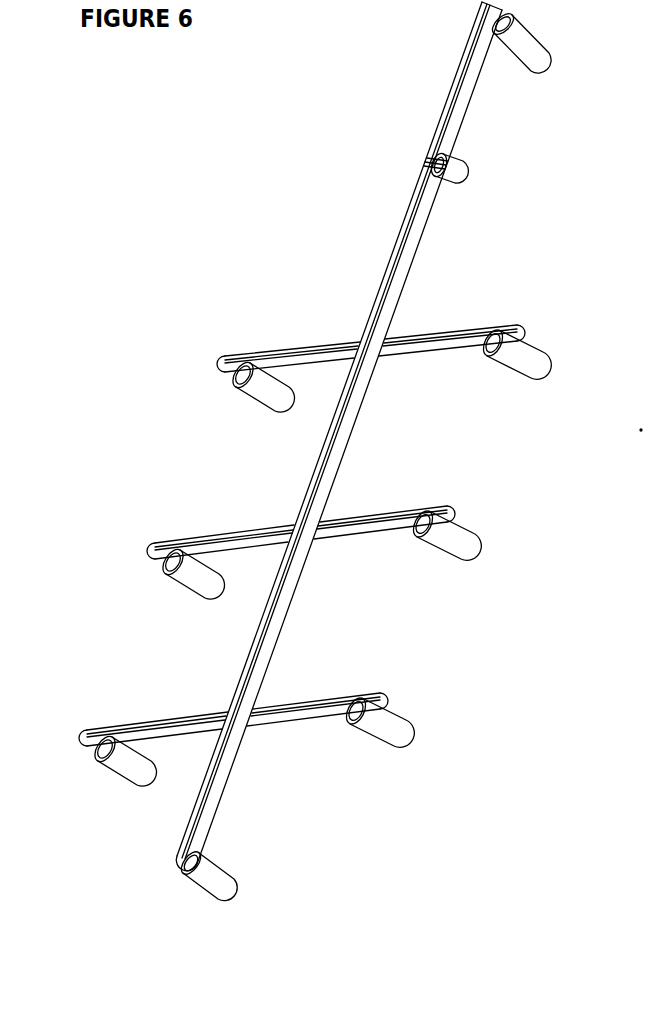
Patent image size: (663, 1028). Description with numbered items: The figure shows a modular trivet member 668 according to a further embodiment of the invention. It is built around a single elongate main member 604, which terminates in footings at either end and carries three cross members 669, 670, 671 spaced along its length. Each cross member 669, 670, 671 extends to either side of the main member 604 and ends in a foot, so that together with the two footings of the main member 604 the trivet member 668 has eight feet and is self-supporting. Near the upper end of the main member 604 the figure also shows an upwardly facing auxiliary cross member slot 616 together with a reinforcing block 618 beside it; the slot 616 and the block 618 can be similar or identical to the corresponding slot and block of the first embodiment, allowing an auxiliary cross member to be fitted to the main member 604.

The trivet member 668 is at (190, 178).
The main member 604 is at (388, 265).
The auxiliary cross member slot 616 is at (425, 158).
The reinforcing block 618 is at (467, 167).
The cross member 669 is at (262, 355).
The cross member 670 is at (207, 532).
The cross member 671 is at (143, 716).